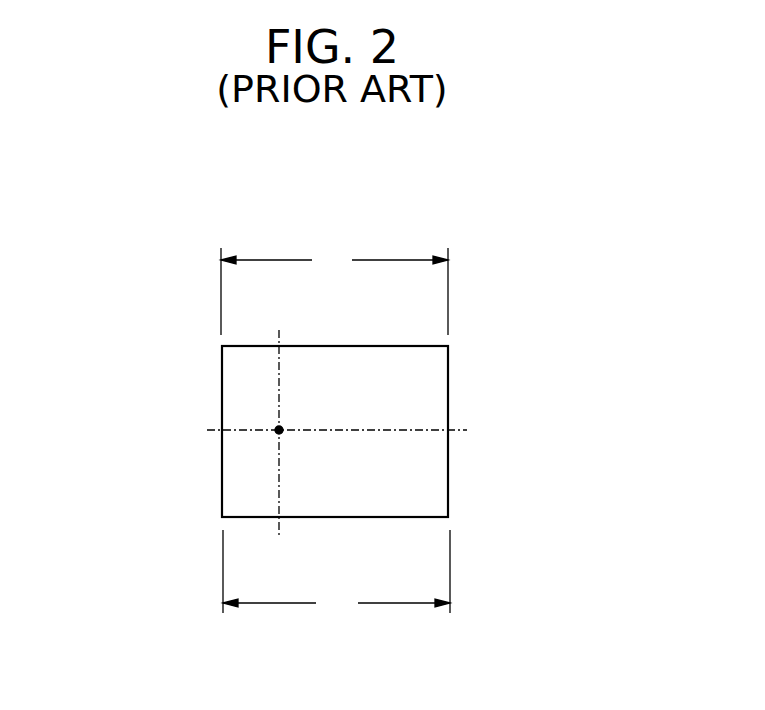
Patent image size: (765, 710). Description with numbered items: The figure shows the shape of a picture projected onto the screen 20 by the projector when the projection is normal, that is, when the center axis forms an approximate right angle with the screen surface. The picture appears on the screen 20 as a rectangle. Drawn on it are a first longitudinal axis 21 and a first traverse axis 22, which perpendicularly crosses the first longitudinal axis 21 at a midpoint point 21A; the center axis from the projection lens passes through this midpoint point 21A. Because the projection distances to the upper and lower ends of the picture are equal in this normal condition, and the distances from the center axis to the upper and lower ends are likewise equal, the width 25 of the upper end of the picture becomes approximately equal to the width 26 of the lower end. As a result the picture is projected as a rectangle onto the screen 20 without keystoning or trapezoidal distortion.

The screen 20 is at (347, 188).
The first longitudinal axis 21 is at (278, 362).
The midpoint point 21A is at (276, 429).
The first traverse axis 22 is at (212, 431).
The width of the upper end of the picture 25 is at (334, 290).
The width of the lower end of the picture 26 is at (336, 574).